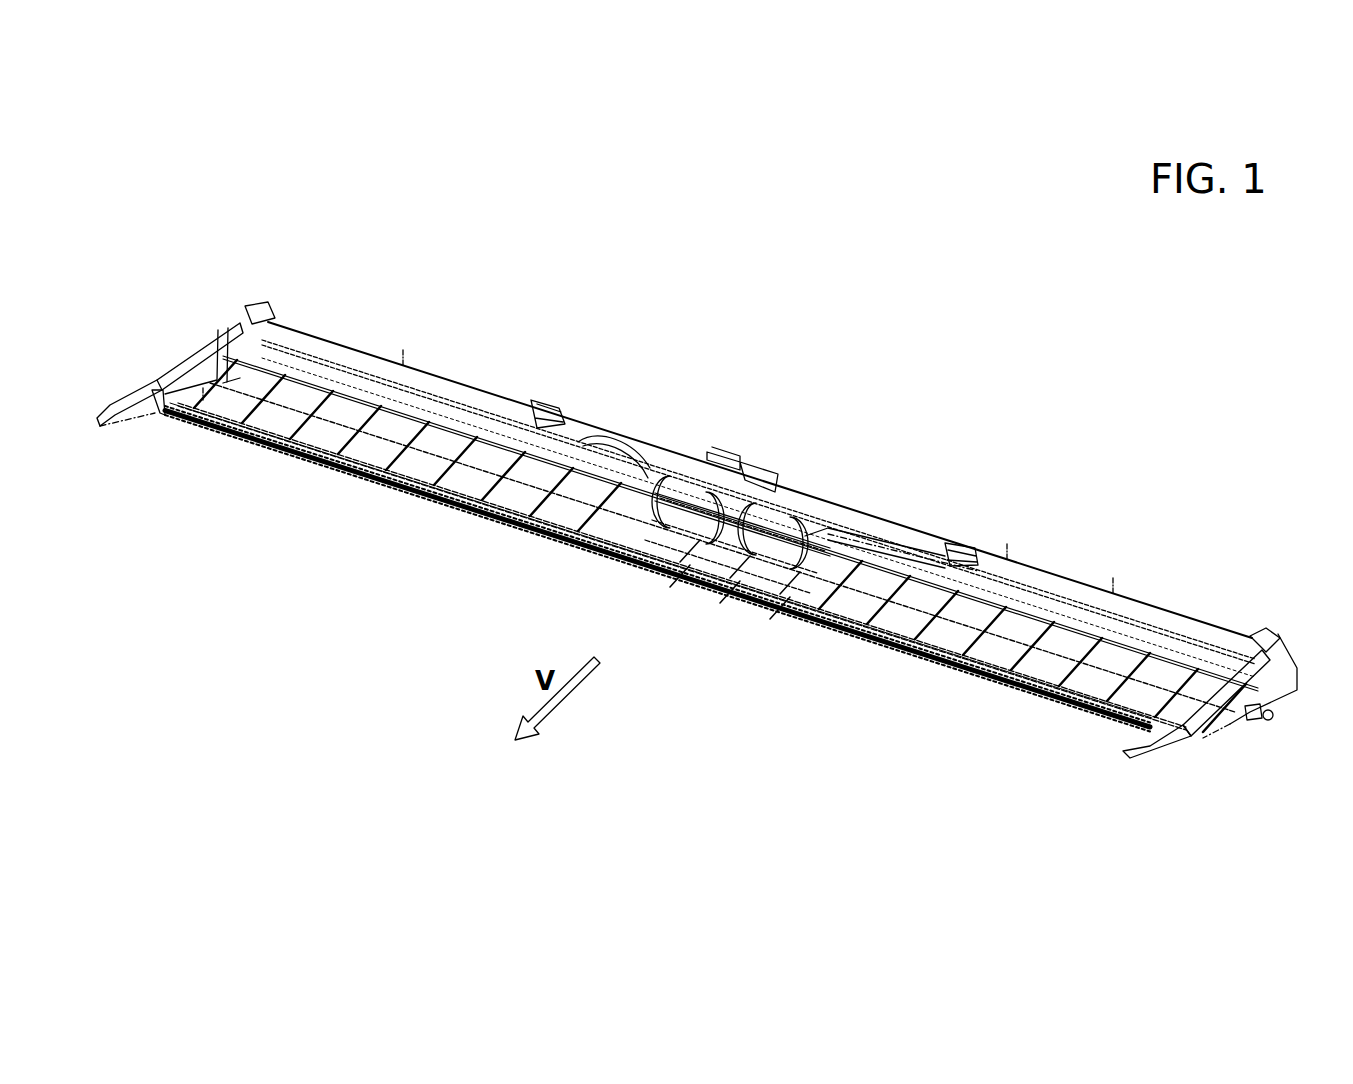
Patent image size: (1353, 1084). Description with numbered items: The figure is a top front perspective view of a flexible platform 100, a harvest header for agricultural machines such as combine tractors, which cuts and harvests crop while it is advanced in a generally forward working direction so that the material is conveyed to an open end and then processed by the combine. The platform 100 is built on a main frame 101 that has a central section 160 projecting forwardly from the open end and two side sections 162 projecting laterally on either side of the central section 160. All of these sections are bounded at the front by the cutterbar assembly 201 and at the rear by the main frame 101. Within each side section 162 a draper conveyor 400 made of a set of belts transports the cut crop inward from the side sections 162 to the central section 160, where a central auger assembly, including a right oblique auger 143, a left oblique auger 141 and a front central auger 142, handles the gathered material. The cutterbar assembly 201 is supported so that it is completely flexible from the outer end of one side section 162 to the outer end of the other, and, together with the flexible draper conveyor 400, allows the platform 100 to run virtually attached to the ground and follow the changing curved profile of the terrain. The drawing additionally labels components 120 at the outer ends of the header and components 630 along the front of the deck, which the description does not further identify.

The flexible platform 100 is at (793, 372).
The main frame 101 is at (328, 348).
The side divider 120 is at (190, 360).
The left oblique auger 141 is at (905, 540).
The front central auger 142 is at (772, 515).
The right oblique auger 143 is at (598, 452).
The central section 160 is at (696, 562).
The side sections 162 is at (295, 477).
The cutterbar assembly 201 is at (510, 528).
The draper conveyor 400 is at (406, 430).
The belt guide strip 630 is at (444, 490).